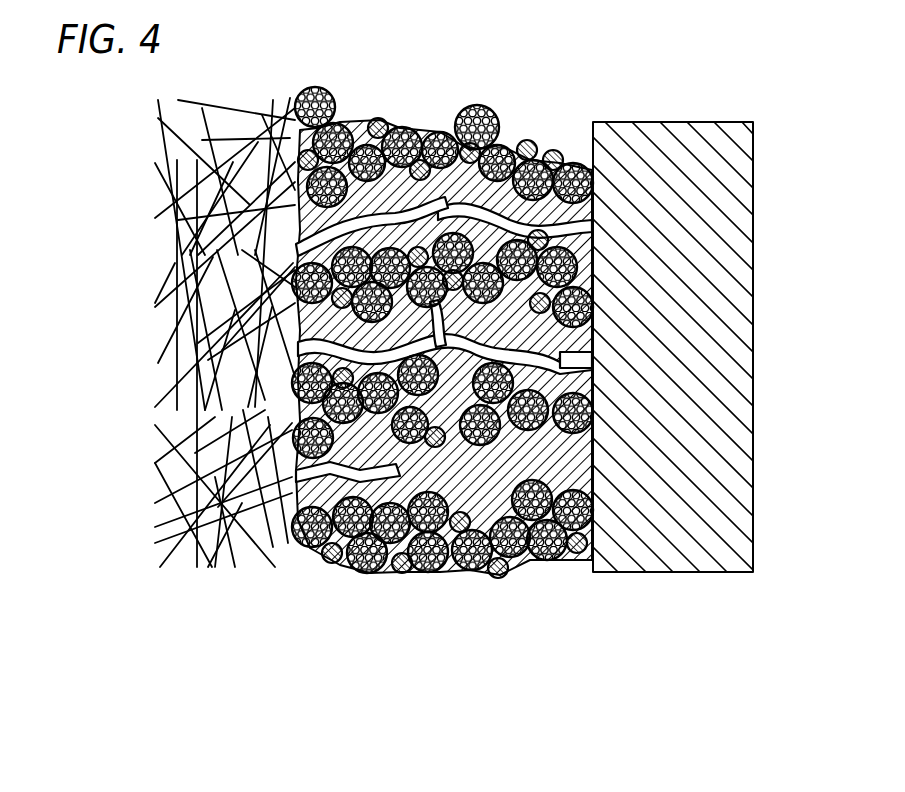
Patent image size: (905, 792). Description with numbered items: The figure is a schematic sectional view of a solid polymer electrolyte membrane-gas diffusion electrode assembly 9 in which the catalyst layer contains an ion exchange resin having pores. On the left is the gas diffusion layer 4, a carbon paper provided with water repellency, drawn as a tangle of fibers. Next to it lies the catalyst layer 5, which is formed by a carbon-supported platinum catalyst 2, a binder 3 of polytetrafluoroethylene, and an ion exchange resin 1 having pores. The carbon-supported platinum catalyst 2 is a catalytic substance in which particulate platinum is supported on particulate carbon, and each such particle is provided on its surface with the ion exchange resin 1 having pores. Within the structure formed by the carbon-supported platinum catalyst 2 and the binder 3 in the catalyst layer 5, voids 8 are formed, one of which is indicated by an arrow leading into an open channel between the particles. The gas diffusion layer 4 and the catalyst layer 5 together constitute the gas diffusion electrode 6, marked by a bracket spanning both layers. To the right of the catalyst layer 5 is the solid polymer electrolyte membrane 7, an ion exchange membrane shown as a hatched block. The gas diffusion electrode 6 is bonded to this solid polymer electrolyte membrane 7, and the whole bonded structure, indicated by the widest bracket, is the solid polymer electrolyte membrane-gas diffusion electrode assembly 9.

The ion exchange resin having pores 1 is at (498, 147).
The carbon-supported platinum catalyst 2 is at (414, 116).
The polytetrafluoroethylene binder 3 is at (366, 104).
The gas diffusion layer 4 is at (293, 604).
The catalyst layer 5 is at (543, 346).
The gas diffusion electrode 6 is at (475, 376).
The solid polymer electrolyte membrane 7 is at (673, 386).
The void 8 is at (588, 360).
The solid polymer electrolyte membrane-gas diffusion electrode assembly 9 is at (475, 410).